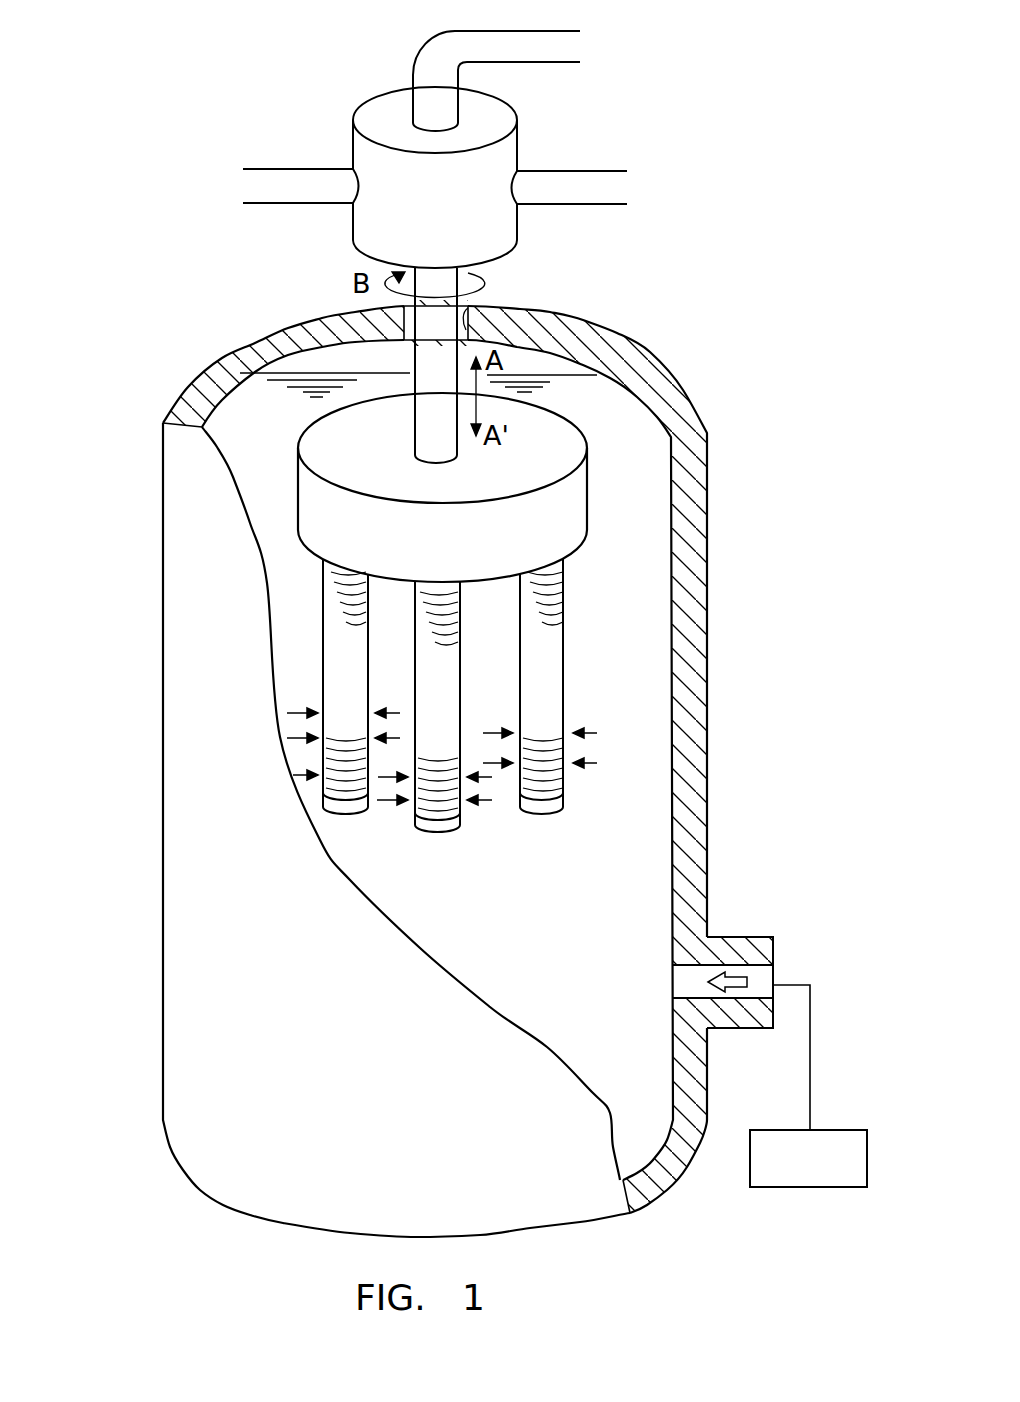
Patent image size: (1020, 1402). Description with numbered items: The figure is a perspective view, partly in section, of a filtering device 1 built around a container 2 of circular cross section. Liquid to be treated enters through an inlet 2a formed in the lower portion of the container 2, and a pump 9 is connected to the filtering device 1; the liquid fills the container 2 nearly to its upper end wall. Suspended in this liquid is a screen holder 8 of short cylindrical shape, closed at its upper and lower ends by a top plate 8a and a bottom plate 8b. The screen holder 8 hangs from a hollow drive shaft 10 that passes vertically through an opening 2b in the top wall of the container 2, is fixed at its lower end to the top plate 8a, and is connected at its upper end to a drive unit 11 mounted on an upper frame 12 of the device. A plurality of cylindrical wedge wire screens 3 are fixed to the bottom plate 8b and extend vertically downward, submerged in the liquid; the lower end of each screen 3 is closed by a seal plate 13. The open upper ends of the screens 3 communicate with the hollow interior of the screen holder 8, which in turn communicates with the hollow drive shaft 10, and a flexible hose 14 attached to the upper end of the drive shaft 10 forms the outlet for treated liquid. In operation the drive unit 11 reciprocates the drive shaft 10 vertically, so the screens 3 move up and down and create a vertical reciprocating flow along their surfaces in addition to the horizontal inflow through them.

The filtering device 1 is at (664, 279).
The container 2 is at (697, 455).
The inlet 2a is at (743, 952).
The opening 2b is at (470, 306).
The cylindrical wedge wire screen 3 is at (487, 749).
The screen holder 8 is at (526, 544).
The top plate 8a is at (530, 457).
The bottom plate 8b is at (485, 580).
The pump 9 is at (838, 1127).
The hollow drive shaft 10 is at (427, 368).
The drive unit 11 is at (503, 150).
The upper frame 12 is at (288, 183).
The seal plate 13 is at (542, 807).
The flexible hose 14 is at (467, 42).